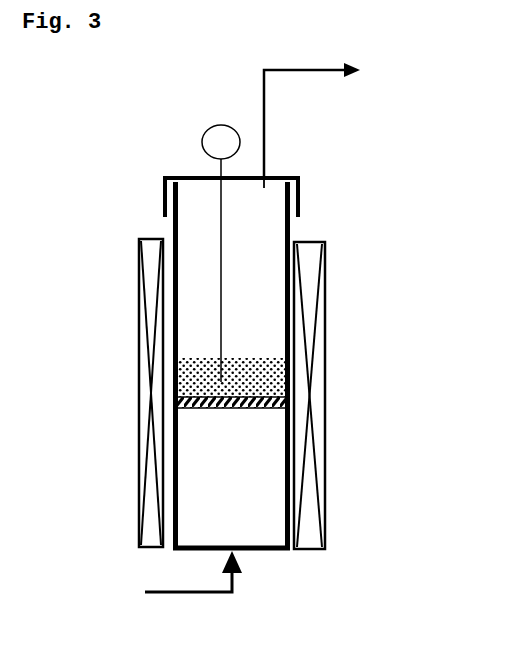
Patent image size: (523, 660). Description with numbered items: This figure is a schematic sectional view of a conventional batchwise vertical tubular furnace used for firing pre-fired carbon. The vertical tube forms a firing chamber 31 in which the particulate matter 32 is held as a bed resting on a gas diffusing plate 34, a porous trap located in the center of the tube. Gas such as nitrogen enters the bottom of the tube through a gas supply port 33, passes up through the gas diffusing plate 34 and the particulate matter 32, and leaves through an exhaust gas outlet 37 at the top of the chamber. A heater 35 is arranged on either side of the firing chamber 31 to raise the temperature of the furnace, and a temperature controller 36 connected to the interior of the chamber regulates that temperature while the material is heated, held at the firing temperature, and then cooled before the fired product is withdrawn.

The firing chamber 31 is at (231, 363).
The particulate matter 32 is at (231, 368).
The gas supply port 33 is at (193, 589).
The gas diffusing plate 34 is at (166, 413).
The heater 35 is at (129, 306).
The temperature controller 36 is at (228, 246).
The exhaust gas outlet 37 is at (336, 120).